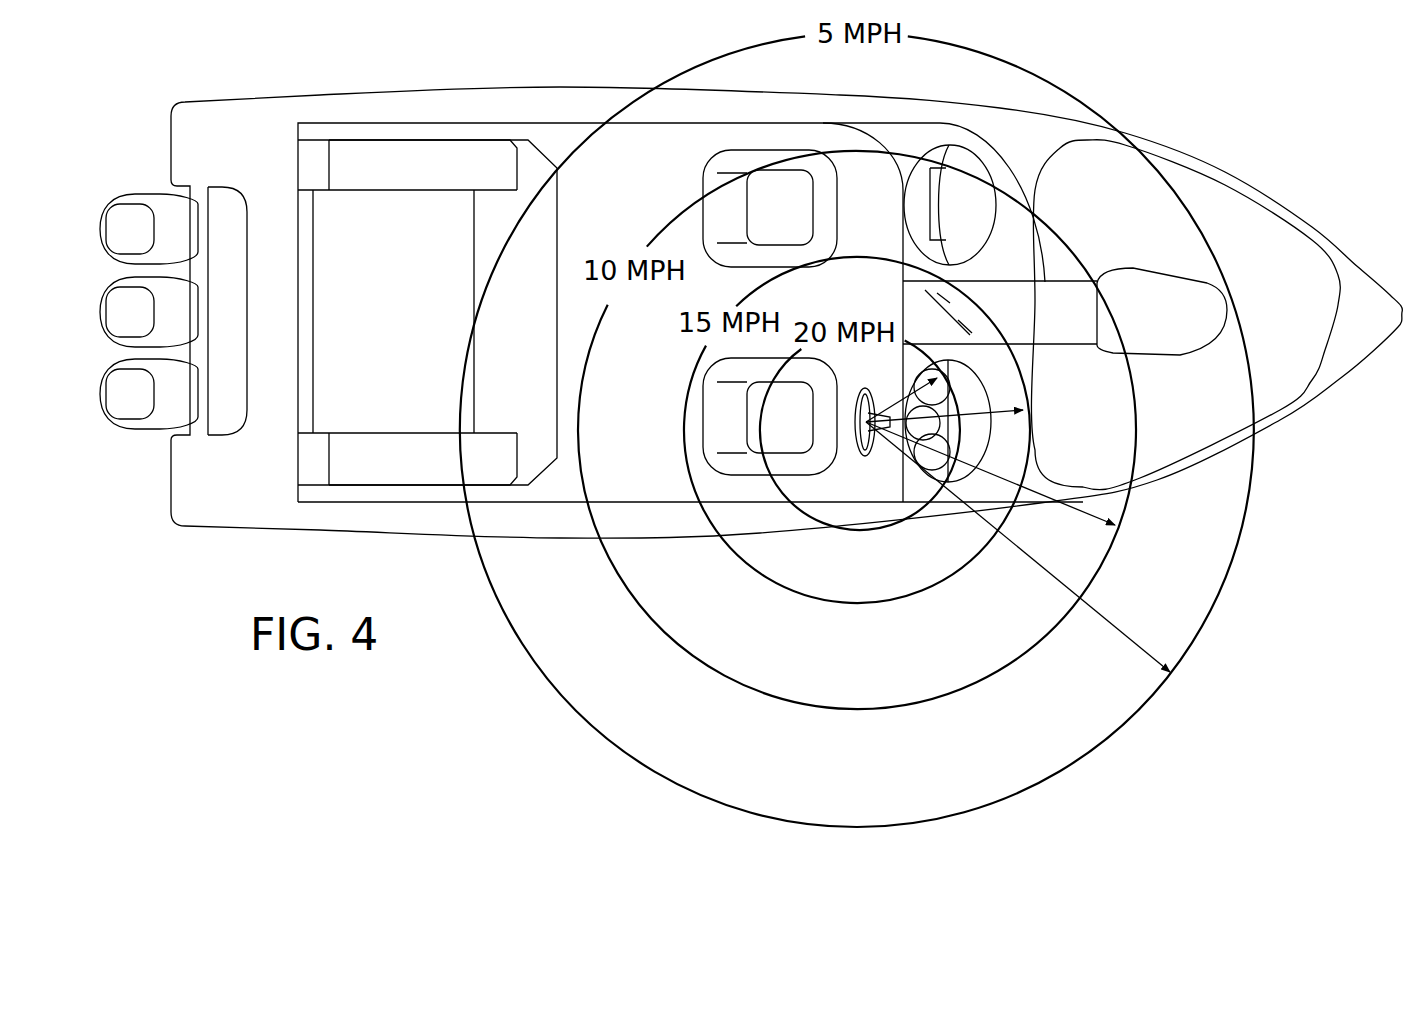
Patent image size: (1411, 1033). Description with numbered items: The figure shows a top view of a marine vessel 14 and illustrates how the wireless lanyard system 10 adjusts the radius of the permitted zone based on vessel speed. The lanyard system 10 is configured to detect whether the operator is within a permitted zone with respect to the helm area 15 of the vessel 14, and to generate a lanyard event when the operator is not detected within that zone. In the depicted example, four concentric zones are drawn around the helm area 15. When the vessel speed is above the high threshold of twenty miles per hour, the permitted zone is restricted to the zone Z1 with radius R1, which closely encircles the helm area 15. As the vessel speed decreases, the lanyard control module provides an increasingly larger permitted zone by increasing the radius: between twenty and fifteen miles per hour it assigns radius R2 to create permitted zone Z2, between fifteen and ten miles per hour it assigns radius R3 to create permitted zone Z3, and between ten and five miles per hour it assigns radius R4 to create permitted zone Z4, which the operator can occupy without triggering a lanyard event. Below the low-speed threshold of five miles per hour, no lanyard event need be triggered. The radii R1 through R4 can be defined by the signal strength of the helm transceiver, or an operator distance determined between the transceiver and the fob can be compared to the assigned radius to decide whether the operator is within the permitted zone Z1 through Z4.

The lanyard system 10 is at (98, 231).
The marine vessel 14 is at (1235, 175).
The helm area 15 is at (862, 372).
The radius R1 is at (950, 382).
The radius R2 is at (960, 416).
The radius R3 is at (1078, 512).
The radius R4 is at (1112, 632).
The permitted zone Z1 is at (805, 503).
The permitted zone Z2 is at (852, 603).
The permitted zone Z3 is at (843, 709).
The permitted zone Z4 is at (858, 826).